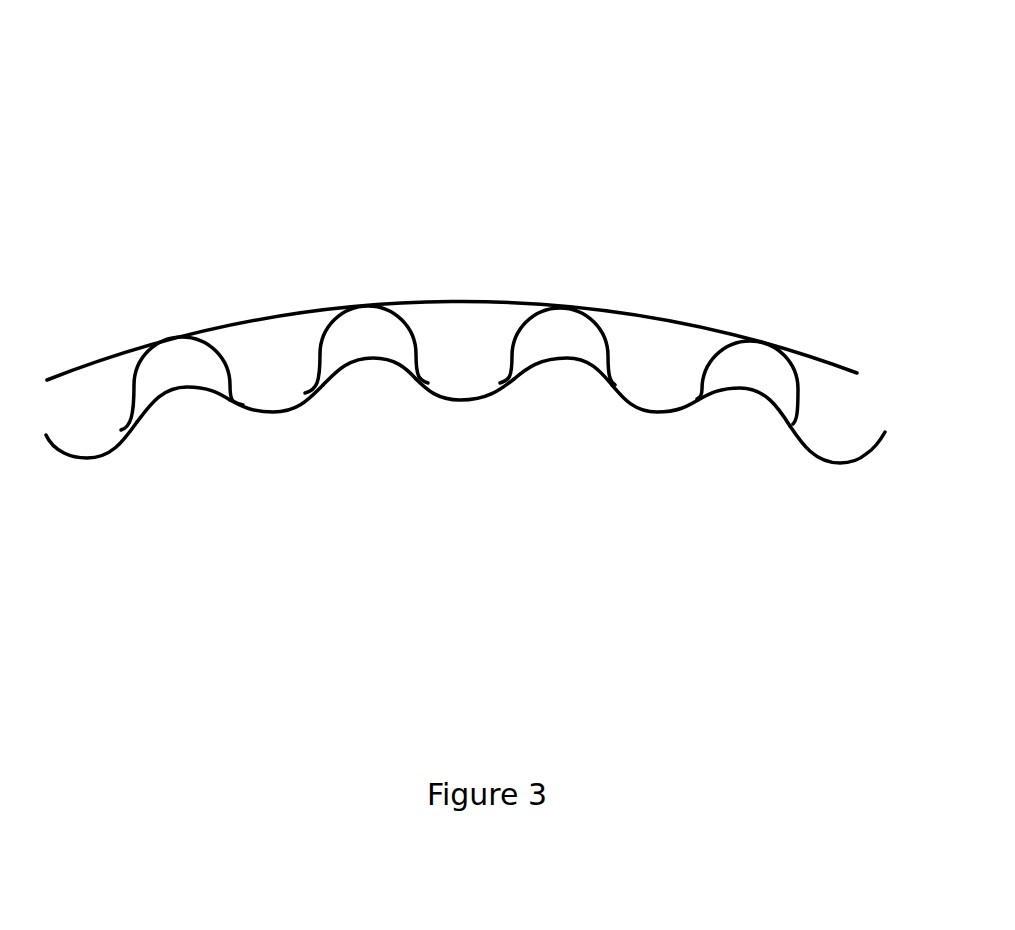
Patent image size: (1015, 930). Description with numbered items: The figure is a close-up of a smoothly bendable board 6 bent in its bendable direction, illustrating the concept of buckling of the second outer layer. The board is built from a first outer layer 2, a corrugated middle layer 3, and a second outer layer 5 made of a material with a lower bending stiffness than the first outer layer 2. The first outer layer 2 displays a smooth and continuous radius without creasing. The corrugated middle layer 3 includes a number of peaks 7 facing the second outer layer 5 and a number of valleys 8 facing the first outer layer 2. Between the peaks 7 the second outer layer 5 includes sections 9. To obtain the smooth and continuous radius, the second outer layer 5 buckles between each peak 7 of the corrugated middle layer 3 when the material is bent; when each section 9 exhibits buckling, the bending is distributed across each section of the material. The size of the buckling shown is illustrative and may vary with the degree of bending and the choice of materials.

The first outer layer 2 is at (697, 305).
The middle layer 3 is at (512, 314).
The second outer layer 5 is at (813, 395).
The smoothly bendable board 6 is at (518, 172).
The peaks 7 is at (279, 425).
The valleys 8 is at (164, 326).
The sections 9 is at (177, 404).